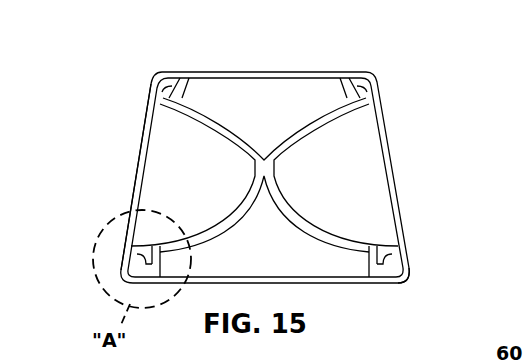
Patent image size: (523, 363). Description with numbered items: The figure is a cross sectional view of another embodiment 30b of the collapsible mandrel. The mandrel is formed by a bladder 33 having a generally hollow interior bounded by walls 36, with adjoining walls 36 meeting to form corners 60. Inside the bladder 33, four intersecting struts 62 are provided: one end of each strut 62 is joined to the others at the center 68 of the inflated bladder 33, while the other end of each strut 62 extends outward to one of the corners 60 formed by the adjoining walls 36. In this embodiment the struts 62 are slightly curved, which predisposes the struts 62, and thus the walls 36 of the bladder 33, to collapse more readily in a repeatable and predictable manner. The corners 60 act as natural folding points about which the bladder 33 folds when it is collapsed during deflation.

The mandrel 30b is at (259, 168).
The bladder 33 is at (119, 183).
The walls 36 is at (382, 131).
The corner 60 is at (408, 285).
The strut 62 is at (212, 118).
The center 68 is at (264, 160).